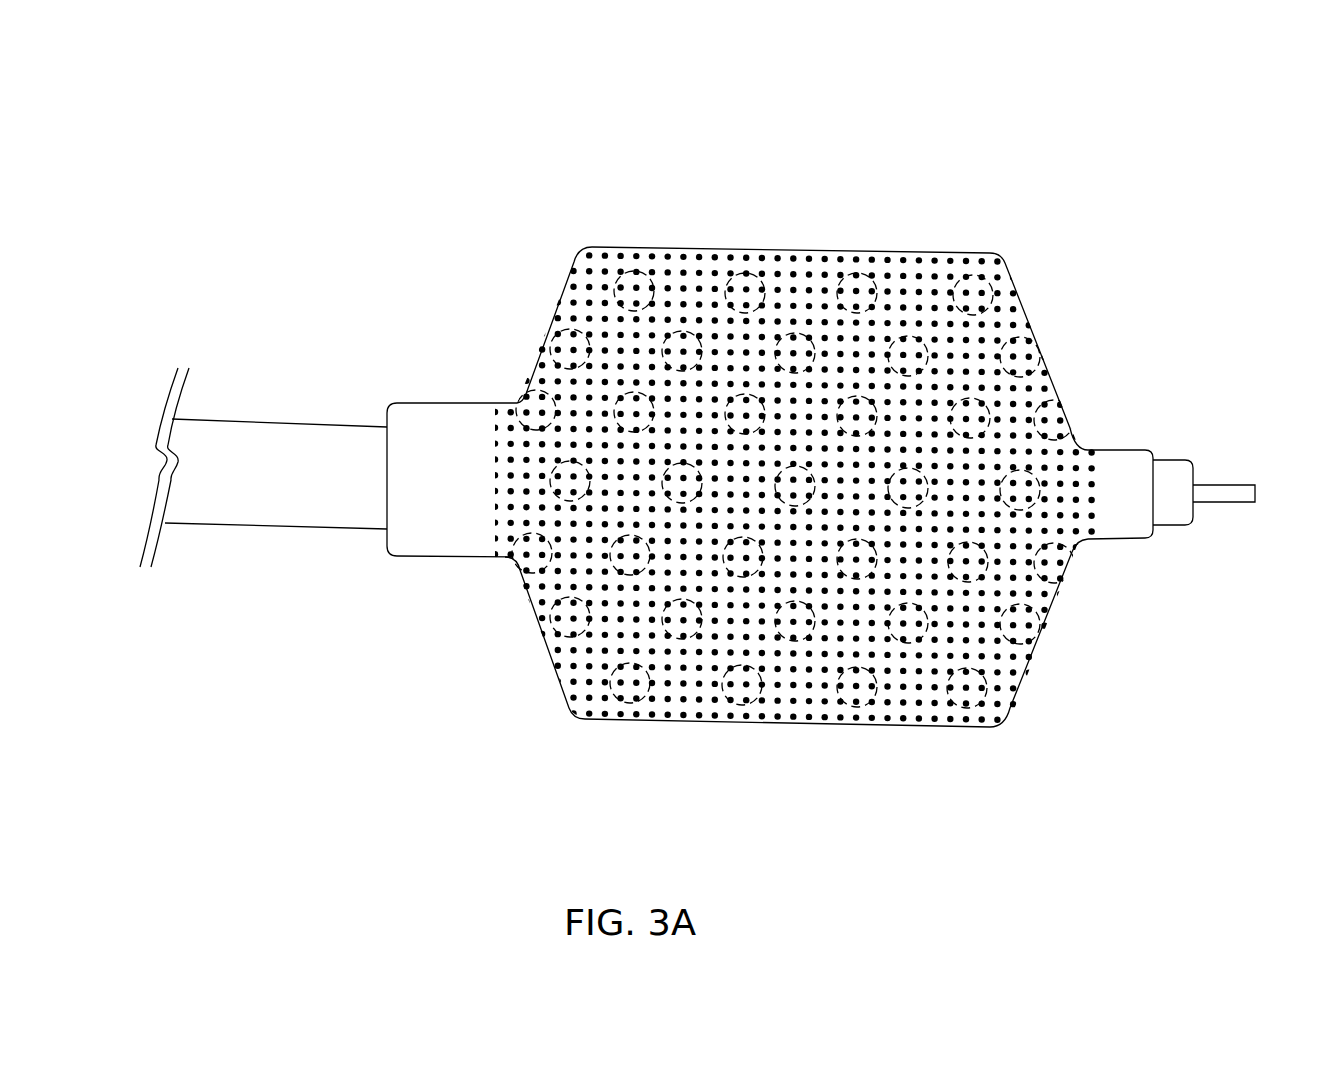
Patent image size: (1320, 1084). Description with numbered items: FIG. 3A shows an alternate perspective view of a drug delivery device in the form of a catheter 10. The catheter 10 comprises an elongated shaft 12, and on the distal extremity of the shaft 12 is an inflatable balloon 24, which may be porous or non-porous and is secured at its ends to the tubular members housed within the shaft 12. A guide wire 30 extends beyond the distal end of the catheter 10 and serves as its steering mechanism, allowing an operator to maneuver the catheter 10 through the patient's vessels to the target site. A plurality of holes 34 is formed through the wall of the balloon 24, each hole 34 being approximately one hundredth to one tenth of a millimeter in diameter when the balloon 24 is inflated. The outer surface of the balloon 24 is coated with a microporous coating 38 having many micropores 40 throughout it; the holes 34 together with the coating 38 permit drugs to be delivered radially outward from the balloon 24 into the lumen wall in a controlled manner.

The catheter 10 is at (554, 138).
The elongated shaft 12 is at (170, 350).
The inflatable balloon 24 is at (1126, 449).
The guide wire 30 is at (1235, 486).
The holes 34 is at (852, 283).
The microporous coating 38 is at (927, 272).
The micropores 40 is at (1022, 303).